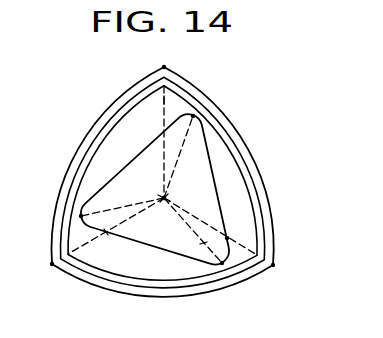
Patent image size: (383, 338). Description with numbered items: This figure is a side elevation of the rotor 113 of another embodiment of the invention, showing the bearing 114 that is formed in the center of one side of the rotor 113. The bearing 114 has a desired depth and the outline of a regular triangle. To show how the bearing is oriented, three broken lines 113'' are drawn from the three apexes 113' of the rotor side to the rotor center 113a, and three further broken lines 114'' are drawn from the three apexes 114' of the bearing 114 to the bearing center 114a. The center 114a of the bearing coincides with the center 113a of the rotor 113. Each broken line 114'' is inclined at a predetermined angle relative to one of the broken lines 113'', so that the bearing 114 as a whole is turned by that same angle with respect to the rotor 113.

The rotor 113 is at (187, 182).
The apexes of the side of the rotor 113' is at (175, 175).
The broken lines 113'' is at (217, 139).
The center of the rotor 113a is at (164, 198).
The bearing 114 is at (151, 173).
The apexes of the bearing 114' is at (151, 221).
The broken lines 114'' is at (183, 267).
The center of the bearing 114a is at (162, 197).